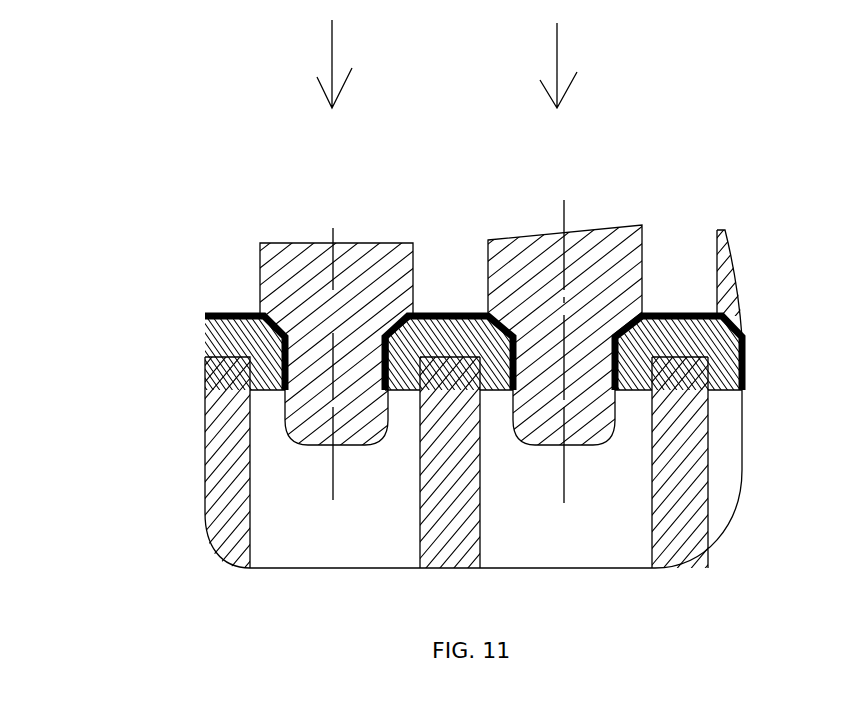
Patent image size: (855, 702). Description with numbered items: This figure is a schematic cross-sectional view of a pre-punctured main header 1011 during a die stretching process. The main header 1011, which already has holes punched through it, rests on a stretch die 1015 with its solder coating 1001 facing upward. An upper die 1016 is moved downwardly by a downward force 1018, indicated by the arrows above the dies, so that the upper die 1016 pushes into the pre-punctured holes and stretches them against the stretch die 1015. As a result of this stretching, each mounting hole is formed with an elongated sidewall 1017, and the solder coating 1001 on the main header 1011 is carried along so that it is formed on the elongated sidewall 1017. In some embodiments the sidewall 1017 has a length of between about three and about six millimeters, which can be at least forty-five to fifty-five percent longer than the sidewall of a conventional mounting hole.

The solder coating 1001 is at (228, 315).
The main header 1011 is at (223, 348).
The stretch die 1015 is at (450, 316).
The upper die 1016 is at (343, 243).
The sidewall 1017 is at (608, 360).
The downward force 1018 is at (328, 47).